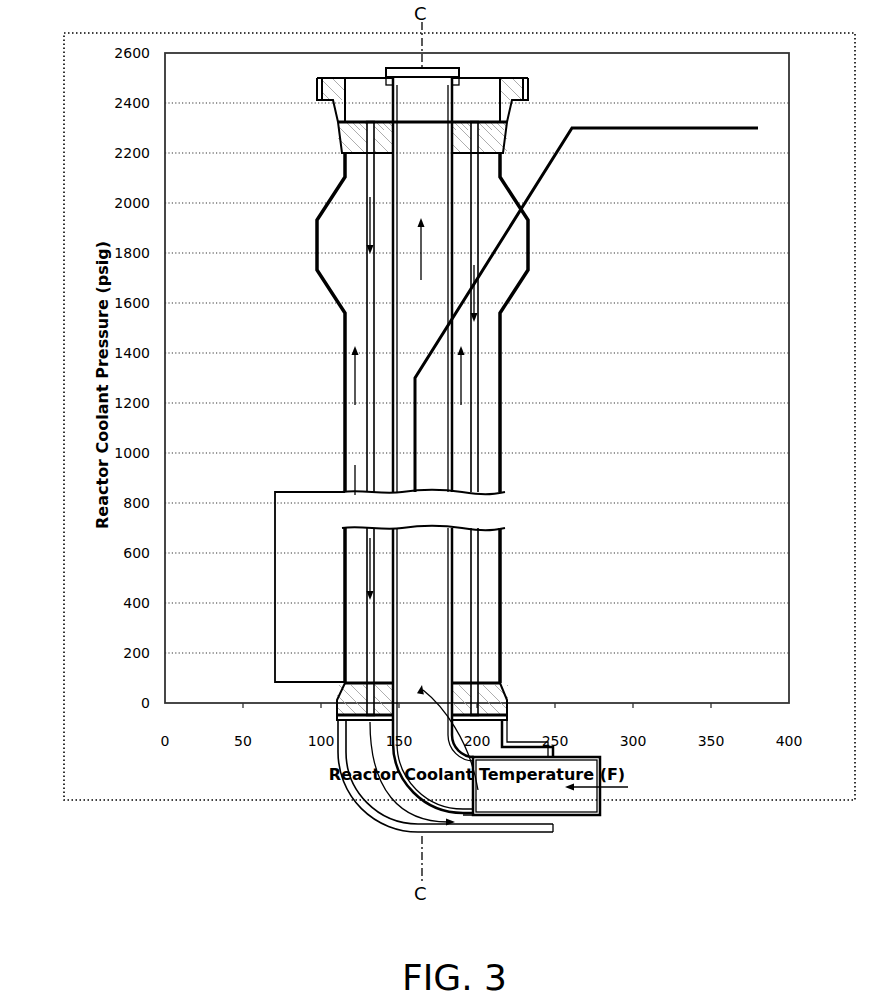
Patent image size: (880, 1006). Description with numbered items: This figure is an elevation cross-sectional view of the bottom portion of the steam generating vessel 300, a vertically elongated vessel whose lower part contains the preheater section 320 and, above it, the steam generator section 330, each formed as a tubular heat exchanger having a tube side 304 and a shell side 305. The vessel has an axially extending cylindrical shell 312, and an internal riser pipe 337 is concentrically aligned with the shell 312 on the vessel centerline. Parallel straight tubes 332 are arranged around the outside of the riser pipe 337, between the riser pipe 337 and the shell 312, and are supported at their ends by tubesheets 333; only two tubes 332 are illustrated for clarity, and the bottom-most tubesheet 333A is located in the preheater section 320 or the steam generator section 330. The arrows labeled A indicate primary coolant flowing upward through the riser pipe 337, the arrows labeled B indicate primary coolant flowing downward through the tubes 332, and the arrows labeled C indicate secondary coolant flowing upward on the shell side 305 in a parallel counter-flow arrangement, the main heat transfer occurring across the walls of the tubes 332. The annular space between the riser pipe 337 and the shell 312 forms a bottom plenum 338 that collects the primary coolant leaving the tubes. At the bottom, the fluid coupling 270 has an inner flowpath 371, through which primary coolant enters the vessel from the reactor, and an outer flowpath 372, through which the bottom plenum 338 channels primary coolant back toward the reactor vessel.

The steam generating vessel 300 is at (273, 46).
The tubesheets 333 is at (492, 142).
The steam generator section 330 is at (503, 245).
The tube side 304 is at (484, 468).
The preheater section 320 is at (346, 622).
The shell side 305 is at (355, 465).
The cylindrical shell 312 is at (326, 437).
The tubes 332 is at (368, 268).
The riser pipe 337 is at (453, 612).
The bottom-most tubesheet 333A is at (352, 700).
The bottom plenum 338 is at (363, 766).
The fluid coupling 270 is at (592, 727).
The inner flowpath 371 is at (562, 775).
The outer flowpath 372 is at (560, 823).
The arrows indicating primary coolant flow direction through the riser pipe A is at (422, 238).
The arrows indicating primary coolant flow direction through the tubes B is at (368, 213).
The arrows indicating secondary coolant flow direction through the shell side C is at (462, 367).